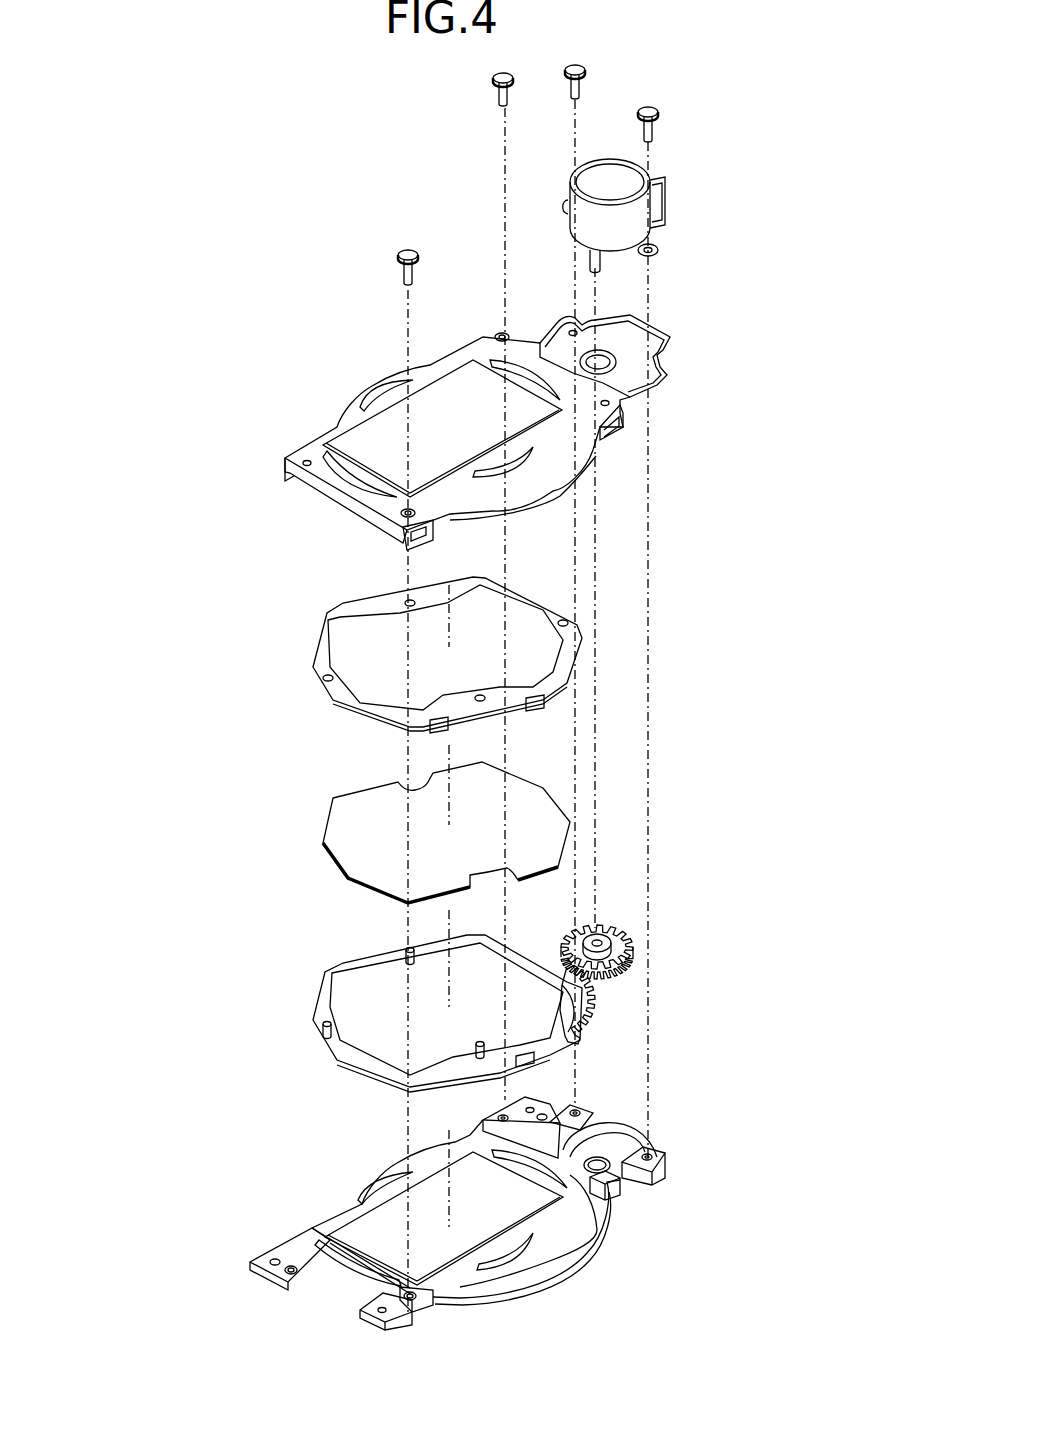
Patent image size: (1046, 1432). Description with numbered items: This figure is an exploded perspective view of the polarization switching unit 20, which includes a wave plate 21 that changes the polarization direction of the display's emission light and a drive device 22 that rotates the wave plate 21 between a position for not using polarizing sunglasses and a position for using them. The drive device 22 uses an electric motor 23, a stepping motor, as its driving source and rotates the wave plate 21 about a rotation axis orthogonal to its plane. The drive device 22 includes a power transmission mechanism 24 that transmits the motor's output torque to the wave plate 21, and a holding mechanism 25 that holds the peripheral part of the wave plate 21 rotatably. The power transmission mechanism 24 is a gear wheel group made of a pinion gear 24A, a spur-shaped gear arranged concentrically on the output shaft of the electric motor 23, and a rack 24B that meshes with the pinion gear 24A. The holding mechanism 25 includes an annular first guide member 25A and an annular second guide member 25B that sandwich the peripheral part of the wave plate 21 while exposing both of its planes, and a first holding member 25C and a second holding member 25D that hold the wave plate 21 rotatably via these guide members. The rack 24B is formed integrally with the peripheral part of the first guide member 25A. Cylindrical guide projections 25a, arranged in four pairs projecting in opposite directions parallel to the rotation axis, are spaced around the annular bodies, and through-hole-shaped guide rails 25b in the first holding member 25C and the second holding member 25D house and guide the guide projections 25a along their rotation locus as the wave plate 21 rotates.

The polarization switching unit 20 is at (253, 138).
The wave plate 21 is at (298, 815).
The drive device 22 is at (464, 744).
The electric motor 23 is at (690, 192).
The power transmission mechanism 24 is at (662, 910).
The pinion gear 24A is at (657, 948).
The rack 24B is at (610, 1003).
The holding mechanism 25 is at (233, 338).
The first guide member 25A is at (295, 992).
The second guide member 25B is at (295, 652).
The first holding member 25C is at (285, 1187).
The second holding member 25D is at (295, 393).
The guide projection 25a is at (405, 957).
The guide rail 25b is at (385, 375).